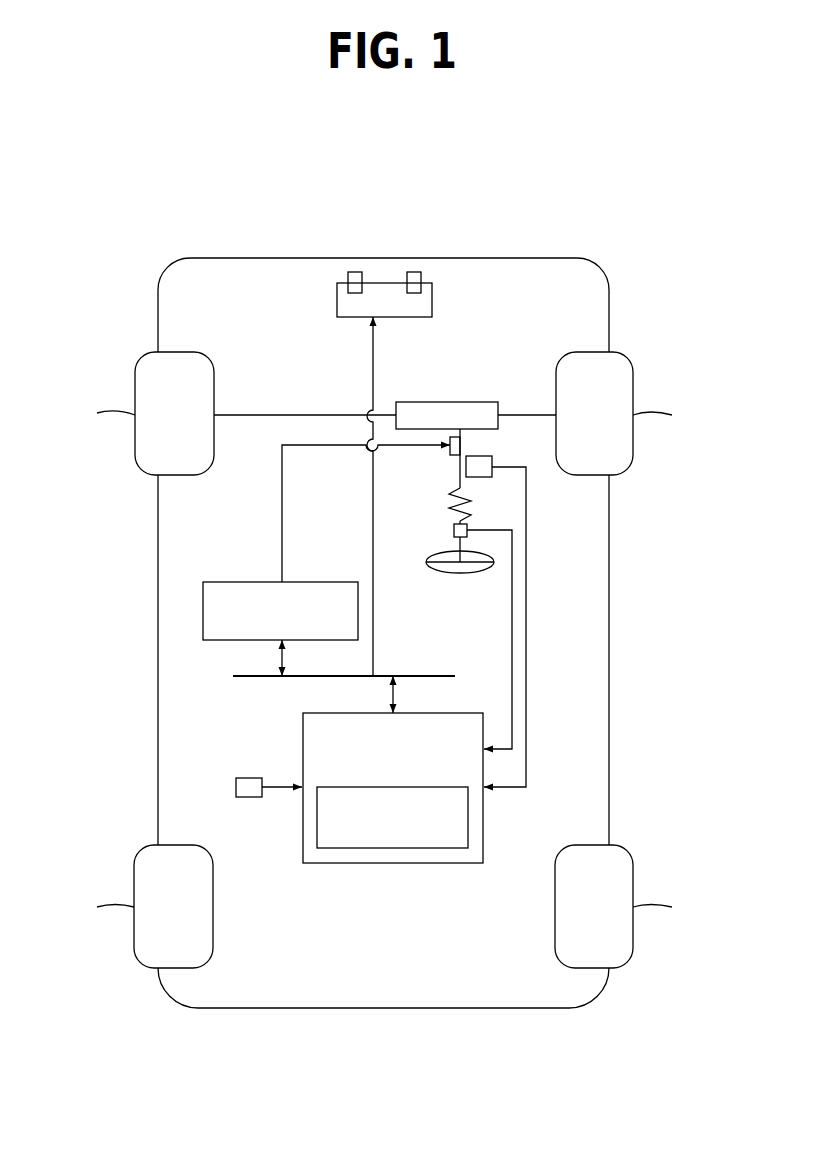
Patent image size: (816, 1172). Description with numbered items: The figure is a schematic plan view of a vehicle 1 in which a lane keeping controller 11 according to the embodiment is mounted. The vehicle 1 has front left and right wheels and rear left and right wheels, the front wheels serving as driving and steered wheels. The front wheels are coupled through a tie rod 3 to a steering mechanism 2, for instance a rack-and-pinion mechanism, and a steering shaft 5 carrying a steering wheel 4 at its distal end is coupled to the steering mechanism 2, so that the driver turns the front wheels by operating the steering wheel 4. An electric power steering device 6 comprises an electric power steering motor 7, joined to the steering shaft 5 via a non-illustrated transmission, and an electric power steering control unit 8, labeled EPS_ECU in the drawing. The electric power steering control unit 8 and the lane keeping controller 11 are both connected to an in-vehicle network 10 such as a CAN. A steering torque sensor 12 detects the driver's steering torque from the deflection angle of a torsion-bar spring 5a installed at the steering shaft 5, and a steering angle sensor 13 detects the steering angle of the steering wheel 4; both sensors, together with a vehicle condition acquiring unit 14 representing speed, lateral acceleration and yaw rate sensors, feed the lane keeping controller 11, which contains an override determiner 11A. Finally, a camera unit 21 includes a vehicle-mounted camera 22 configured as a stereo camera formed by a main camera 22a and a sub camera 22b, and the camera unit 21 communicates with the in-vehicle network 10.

The vehicle 1 is at (544, 187).
The steering mechanism 2 is at (442, 402).
The tie rod 3 is at (285, 414).
The steering wheel 4 is at (460, 573).
The steering shaft 5 is at (459, 479).
The torsion-bar spring 5a is at (458, 506).
The electric power steering device 6 is at (266, 532).
The electric power steering motor 7 is at (453, 456).
The electric power steering control unit 8 is at (310, 582).
The in-vehicle network 10 is at (415, 675).
The lane keeping controller 11 is at (393, 816).
The override determiner 11A is at (367, 849).
The steering torque sensor 12 is at (454, 533).
The steering angle sensor 13 is at (483, 456).
The vehicle condition acquiring unit 14 is at (249, 778).
The camera unit 21 is at (337, 301).
The vehicle-mounted camera 22 is at (336, 205).
The main camera 22a is at (355, 272).
The sub camera 22b is at (414, 272).